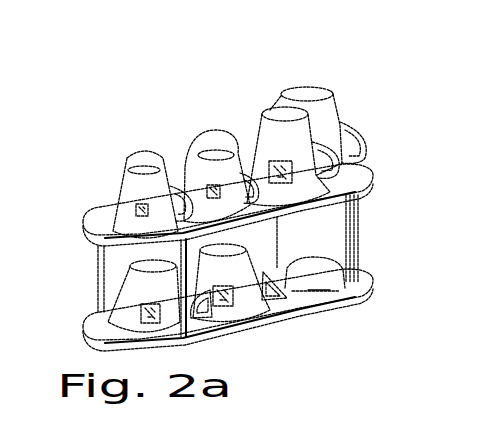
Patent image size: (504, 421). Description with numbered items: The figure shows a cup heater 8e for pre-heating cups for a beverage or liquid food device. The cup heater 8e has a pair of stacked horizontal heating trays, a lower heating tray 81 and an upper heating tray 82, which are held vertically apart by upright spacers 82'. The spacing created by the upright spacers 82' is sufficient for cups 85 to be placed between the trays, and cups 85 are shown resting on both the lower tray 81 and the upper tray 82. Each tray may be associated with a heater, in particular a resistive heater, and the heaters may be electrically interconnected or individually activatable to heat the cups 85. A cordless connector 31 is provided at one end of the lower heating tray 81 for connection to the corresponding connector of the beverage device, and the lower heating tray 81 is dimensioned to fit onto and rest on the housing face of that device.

The cup heater 8e is at (270, 185).
The upper heating tray 82 is at (219, 205).
The upright spacers 82' is at (215, 299).
The lower heating tray 81 is at (260, 266).
The cups 85 is at (274, 129).
The cordless connector 31 is at (315, 258).